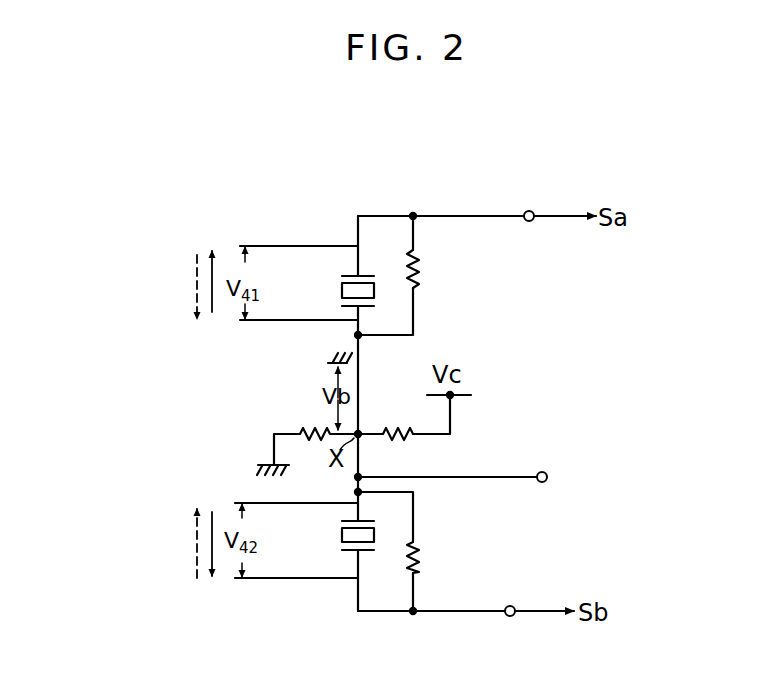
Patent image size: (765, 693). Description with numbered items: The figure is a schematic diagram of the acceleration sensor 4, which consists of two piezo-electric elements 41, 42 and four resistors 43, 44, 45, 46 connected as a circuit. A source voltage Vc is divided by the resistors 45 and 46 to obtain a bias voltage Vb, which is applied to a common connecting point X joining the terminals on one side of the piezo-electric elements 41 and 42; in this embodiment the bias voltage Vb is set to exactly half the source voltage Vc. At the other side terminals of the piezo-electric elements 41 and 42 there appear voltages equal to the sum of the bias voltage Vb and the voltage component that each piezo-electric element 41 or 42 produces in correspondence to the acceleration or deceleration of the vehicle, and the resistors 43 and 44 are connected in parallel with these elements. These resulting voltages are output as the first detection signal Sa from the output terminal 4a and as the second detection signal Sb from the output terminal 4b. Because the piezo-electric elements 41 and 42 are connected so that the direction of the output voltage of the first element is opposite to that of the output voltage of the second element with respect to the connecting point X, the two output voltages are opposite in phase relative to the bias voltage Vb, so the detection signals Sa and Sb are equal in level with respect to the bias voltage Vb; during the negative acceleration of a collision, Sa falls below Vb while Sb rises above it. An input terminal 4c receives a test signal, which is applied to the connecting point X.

The acceleration sensor 4 is at (566, 202).
The output terminal 4a is at (529, 221).
The output terminal 4b is at (510, 616).
The input terminal 4c is at (547, 477).
The piezo-electric element 41 is at (341, 288).
The piezo-electric element 42 is at (341, 534).
The resistor 43 is at (418, 270).
The resistor 44 is at (418, 550).
The resistor 45 is at (404, 434).
The resistor 46 is at (326, 426).